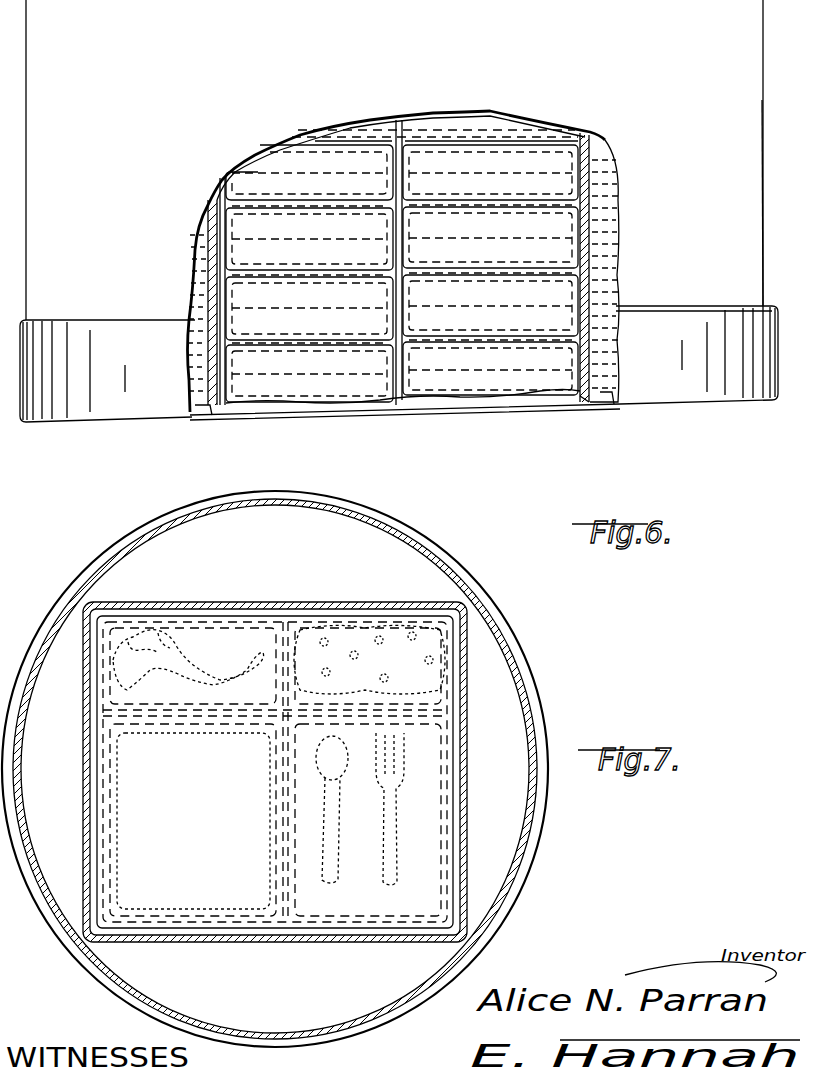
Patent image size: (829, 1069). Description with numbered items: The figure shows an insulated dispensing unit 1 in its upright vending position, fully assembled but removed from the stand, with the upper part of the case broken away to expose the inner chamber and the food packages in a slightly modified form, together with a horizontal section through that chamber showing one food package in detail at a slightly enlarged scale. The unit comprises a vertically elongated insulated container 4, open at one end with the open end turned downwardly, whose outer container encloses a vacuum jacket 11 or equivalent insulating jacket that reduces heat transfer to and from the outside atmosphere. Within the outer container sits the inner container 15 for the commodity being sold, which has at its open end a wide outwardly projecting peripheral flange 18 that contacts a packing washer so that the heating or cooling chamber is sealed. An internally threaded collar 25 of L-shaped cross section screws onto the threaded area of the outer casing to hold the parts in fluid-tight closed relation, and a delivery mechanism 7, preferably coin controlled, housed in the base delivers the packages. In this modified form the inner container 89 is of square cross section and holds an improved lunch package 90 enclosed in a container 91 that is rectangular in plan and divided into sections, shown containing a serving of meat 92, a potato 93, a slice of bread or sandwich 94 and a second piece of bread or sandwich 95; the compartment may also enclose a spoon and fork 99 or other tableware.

In FIG. 6, the insulated dispensing unit 1 is at (748, 62).
In FIG. 6, the insulated container 4 is at (757, 189).
In FIG. 6, the delivery mechanism 7 is at (190, 278).
In FIG. 6, the internally threaded collar 25 is at (780, 310).
In FIG. 6, the peripheral flange 18 is at (198, 425).
In FIG. 6, the inner container 15 is at (585, 397).
In FIG. 7, the inner container 15 is at (465, 688).
In FIG. 7, the vacuum jacket 11 is at (518, 661).
In FIG. 7, the inner container 89 is at (462, 728).
In FIG. 7, the lunch package 90 is at (465, 796).
In FIG. 7, the container 91 is at (462, 848).
In FIG. 7, the serving of meat 92 is at (178, 665).
In FIG. 7, the potato 93 is at (322, 622).
In FIG. 7, the slice of bread or sandwich 94 is at (198, 723).
In FIG. 7, the second piece of bread or sandwich 95 is at (353, 718).
In FIG. 7, the spoon and fork 99 is at (385, 828).